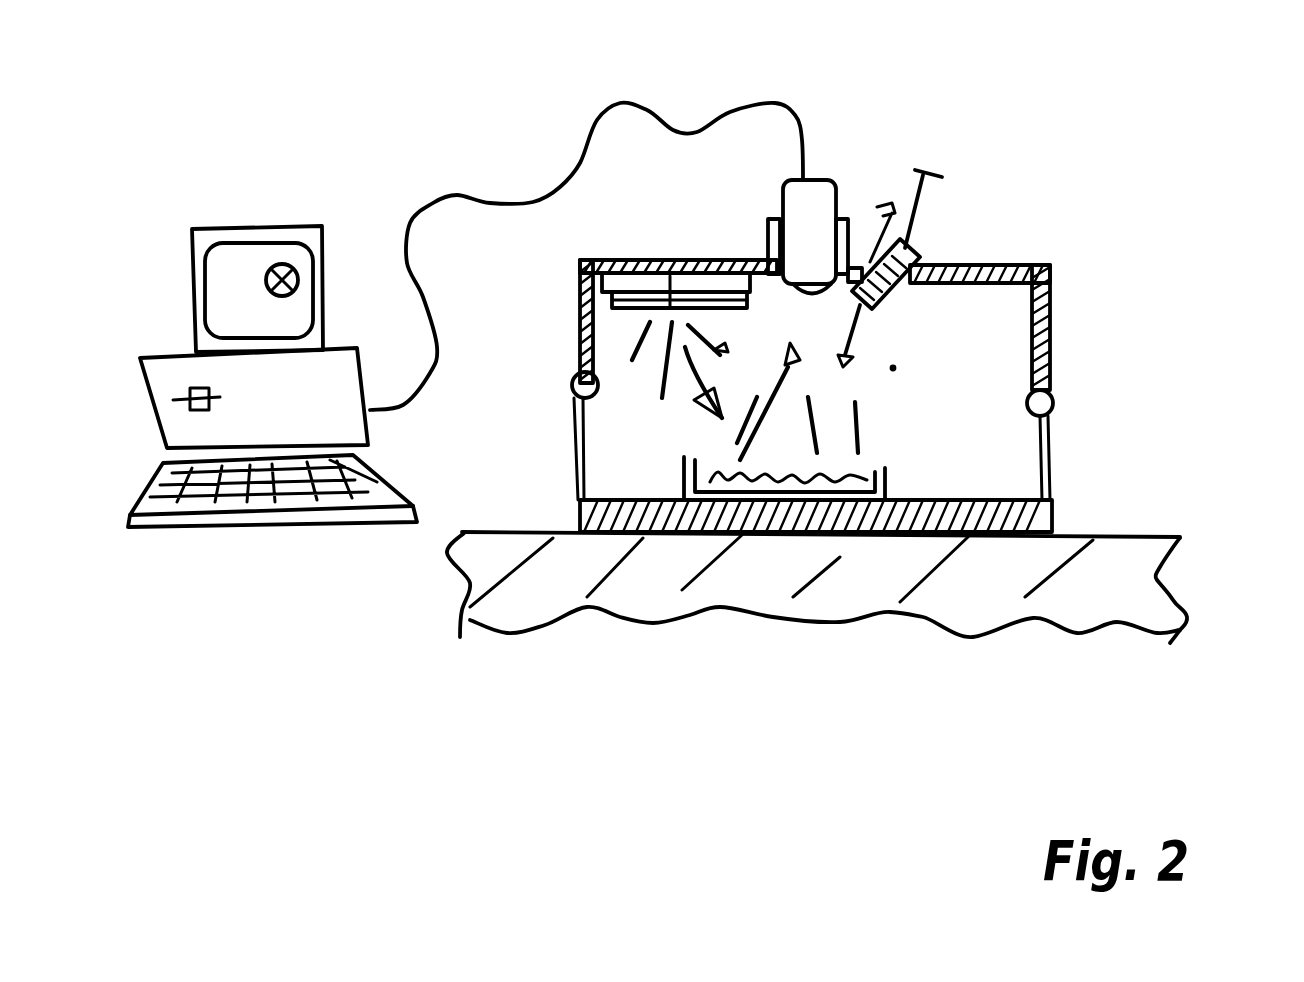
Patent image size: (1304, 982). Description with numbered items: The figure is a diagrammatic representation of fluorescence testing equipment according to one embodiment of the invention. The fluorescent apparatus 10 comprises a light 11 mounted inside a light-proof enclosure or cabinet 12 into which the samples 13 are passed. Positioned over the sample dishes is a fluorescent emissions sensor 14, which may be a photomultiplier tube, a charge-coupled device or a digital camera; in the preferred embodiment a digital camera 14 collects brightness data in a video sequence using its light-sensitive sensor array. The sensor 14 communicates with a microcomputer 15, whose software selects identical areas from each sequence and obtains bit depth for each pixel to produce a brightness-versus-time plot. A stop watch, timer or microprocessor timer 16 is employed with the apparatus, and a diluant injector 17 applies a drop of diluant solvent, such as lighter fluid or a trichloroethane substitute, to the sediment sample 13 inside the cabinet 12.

The fluorescent apparatus 10 is at (1067, 147).
The light 11 is at (668, 293).
The light-proof enclosure 12 is at (1047, 307).
The samples 13 is at (835, 490).
The fluorescent emissions sensor 14 is at (807, 213).
The microcomputer 15 is at (465, 312).
The timer 16 is at (293, 291).
The diluant injector 17 is at (915, 223).